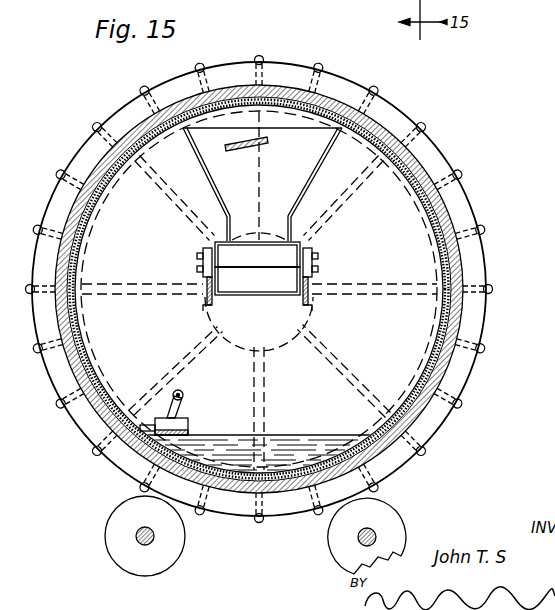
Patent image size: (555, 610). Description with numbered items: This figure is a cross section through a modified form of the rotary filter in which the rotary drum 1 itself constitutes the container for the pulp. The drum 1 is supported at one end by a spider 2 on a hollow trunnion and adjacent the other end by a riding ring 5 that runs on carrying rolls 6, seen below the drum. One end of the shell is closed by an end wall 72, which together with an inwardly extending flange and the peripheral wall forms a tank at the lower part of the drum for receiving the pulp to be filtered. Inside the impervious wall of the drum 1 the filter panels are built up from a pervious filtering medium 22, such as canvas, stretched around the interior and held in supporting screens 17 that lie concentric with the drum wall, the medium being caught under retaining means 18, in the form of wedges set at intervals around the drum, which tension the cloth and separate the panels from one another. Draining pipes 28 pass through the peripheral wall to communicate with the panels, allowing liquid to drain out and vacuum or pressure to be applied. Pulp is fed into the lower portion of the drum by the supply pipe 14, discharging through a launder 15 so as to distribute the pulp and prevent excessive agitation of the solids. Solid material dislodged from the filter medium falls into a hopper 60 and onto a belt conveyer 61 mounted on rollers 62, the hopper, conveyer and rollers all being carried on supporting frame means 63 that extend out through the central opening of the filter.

The rotary drum 1 is at (416, 157).
The riding ring 5 is at (462, 198).
The draining pipes 28 is at (470, 237).
The supporting screens 17 is at (75, 251).
The retaining means 18 is at (259, 289).
The filtering medium 22 is at (72, 310).
The spider 2 is at (380, 297).
The end wall 72 is at (377, 243).
The hopper 60 is at (307, 179).
The belt conveyer 61 is at (254, 246).
The rollers 62 is at (276, 262).
The supporting frame means 63 is at (204, 298).
The supply pipe 14 is at (181, 397).
The launder 15 is at (186, 427).
The carrying rolls 6 is at (120, 513).